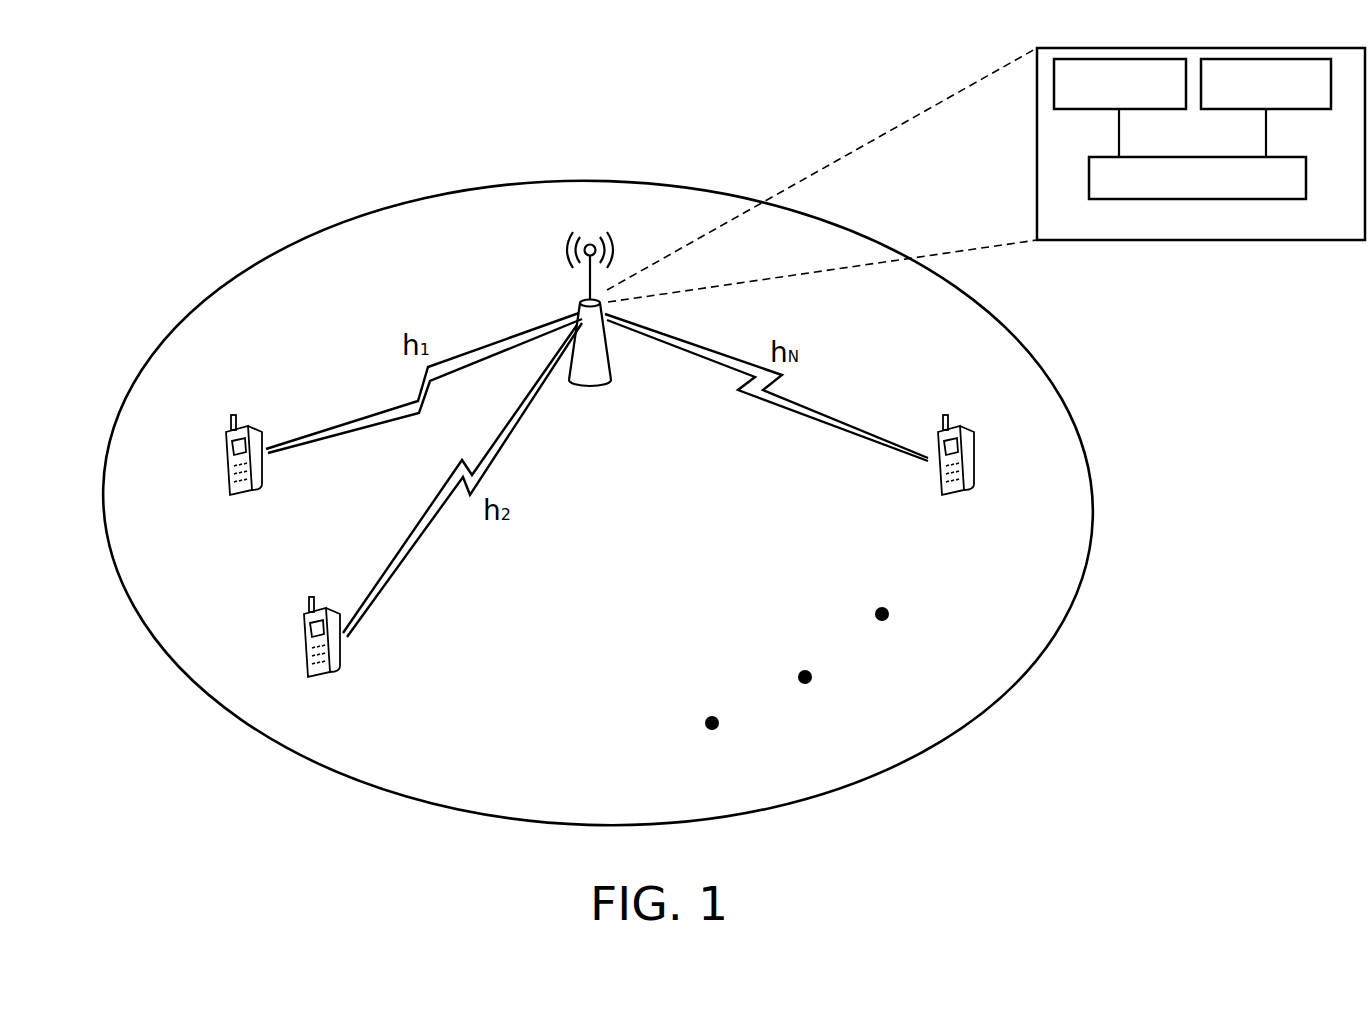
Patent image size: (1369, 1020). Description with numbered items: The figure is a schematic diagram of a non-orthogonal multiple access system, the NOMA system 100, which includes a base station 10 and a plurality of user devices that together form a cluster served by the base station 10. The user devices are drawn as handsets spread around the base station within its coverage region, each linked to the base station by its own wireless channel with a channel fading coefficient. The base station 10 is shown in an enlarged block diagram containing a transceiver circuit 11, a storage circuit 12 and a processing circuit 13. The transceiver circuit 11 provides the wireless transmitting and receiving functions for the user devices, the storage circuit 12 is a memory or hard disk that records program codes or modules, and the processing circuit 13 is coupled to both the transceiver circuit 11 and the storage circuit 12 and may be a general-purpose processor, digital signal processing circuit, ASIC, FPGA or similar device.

The NOMA system 100 is at (1173, 827).
The base station 10 is at (1310, 243).
The transceiver circuit 11 is at (1113, 58).
The storage circuit 12 is at (1265, 58).
The processing circuit 13 is at (1089, 173).